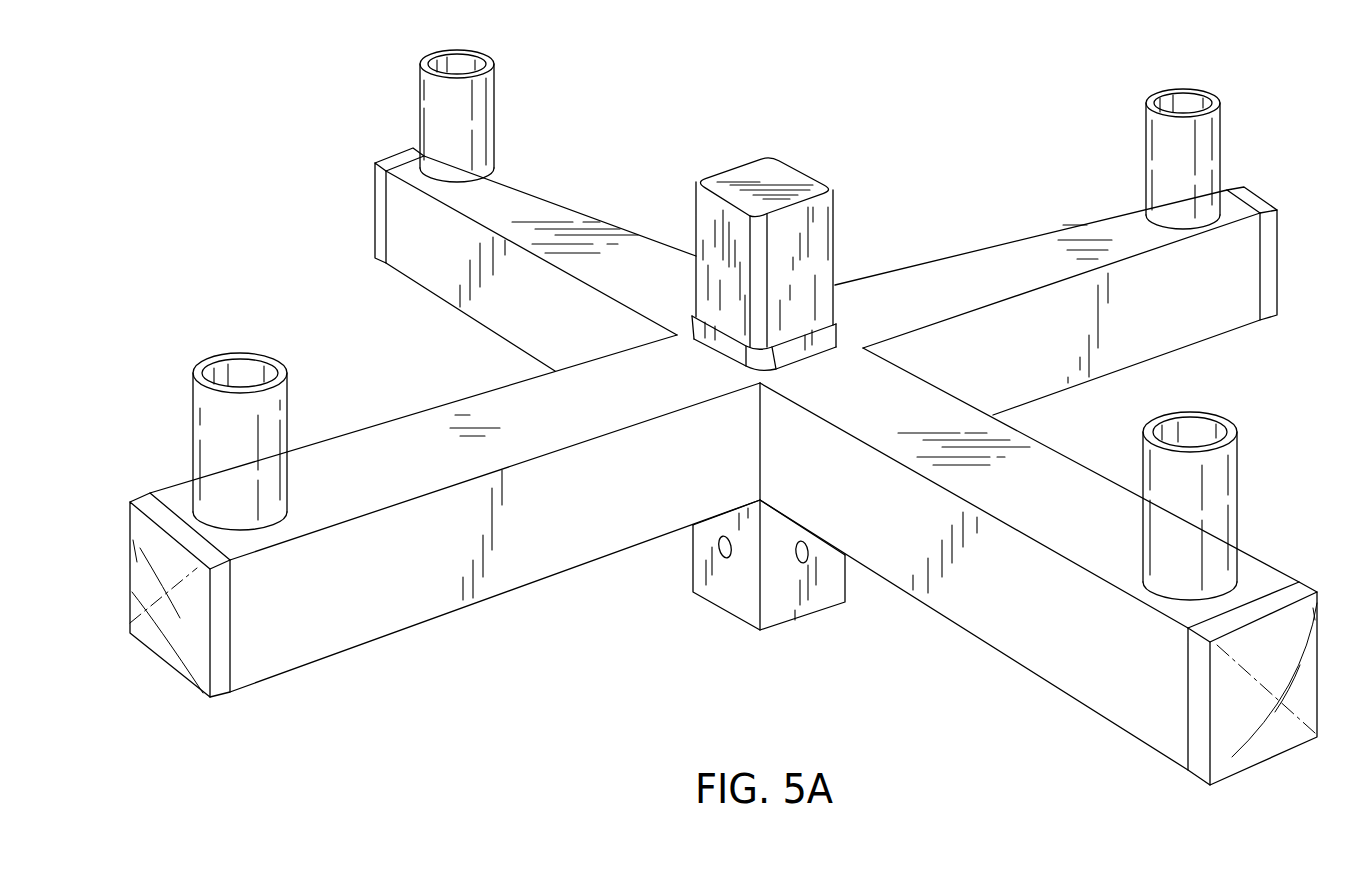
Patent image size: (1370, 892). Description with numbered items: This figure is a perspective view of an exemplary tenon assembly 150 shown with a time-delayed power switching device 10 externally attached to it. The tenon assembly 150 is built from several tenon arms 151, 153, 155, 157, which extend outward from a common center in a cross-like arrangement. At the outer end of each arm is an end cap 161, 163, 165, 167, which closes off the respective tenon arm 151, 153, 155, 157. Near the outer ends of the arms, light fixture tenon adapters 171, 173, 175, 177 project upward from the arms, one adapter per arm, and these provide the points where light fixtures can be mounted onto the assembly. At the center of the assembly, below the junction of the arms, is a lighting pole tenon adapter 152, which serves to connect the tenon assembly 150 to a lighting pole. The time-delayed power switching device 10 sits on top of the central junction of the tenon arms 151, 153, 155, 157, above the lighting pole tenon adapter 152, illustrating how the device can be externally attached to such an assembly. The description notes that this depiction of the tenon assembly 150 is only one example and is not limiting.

The time-delayed power switching device 10 is at (813, 168).
The tenon assembly 150 is at (1255, 408).
The tenon arm 151 is at (1030, 615).
The lighting pole tenon adapter 152 is at (723, 595).
The tenon arm 153 is at (526, 533).
The tenon arm 155 is at (450, 248).
The tenon arm 157 is at (1172, 322).
The end cap 161 is at (1280, 722).
The end cap 163 is at (145, 637).
The end cap 165 is at (378, 203).
The end cap 167 is at (1270, 262).
The light fixture tenon adapter 171 is at (1218, 503).
The light fixture tenon adapter 173 is at (223, 428).
The light fixture tenon adapter 175 is at (435, 102).
The light fixture tenon adapter 177 is at (1205, 148).